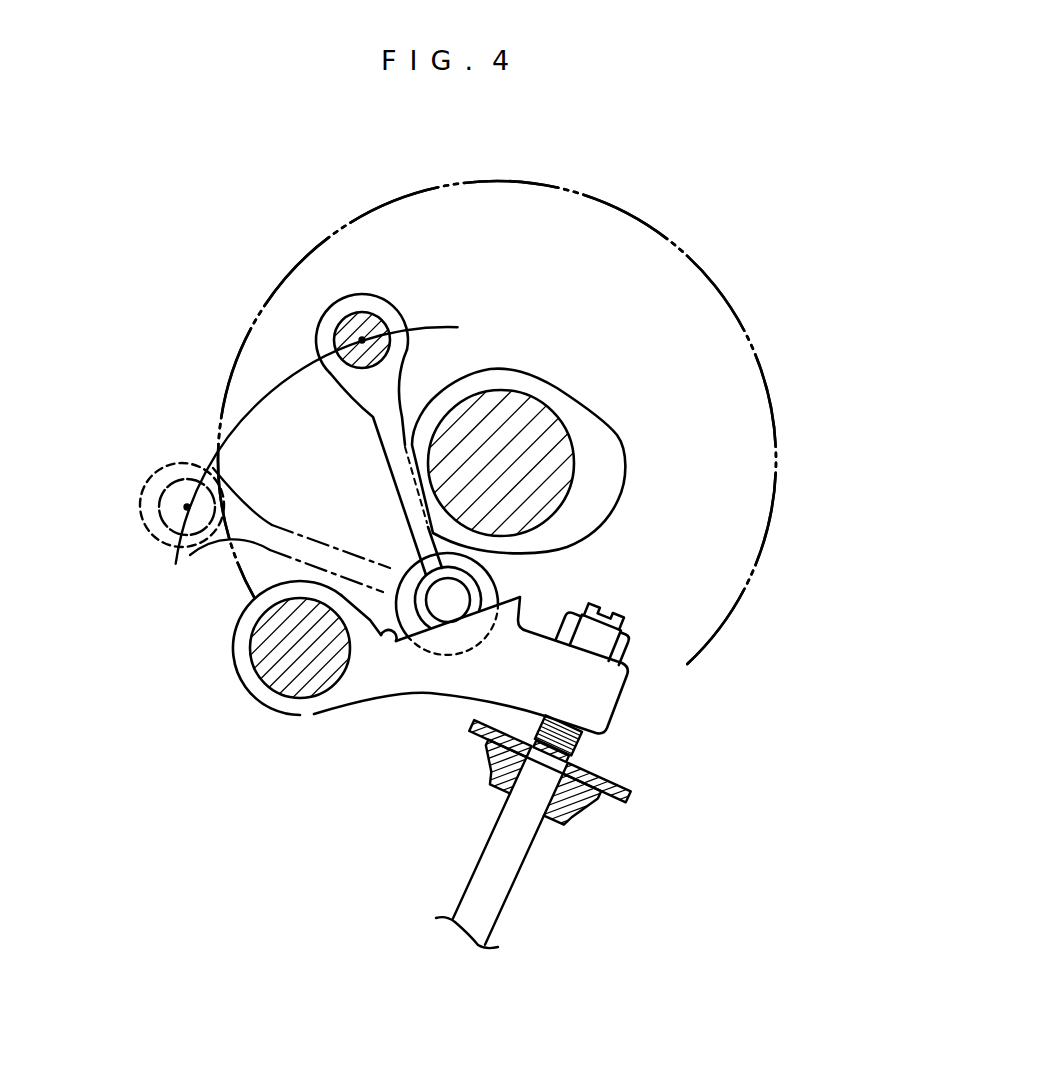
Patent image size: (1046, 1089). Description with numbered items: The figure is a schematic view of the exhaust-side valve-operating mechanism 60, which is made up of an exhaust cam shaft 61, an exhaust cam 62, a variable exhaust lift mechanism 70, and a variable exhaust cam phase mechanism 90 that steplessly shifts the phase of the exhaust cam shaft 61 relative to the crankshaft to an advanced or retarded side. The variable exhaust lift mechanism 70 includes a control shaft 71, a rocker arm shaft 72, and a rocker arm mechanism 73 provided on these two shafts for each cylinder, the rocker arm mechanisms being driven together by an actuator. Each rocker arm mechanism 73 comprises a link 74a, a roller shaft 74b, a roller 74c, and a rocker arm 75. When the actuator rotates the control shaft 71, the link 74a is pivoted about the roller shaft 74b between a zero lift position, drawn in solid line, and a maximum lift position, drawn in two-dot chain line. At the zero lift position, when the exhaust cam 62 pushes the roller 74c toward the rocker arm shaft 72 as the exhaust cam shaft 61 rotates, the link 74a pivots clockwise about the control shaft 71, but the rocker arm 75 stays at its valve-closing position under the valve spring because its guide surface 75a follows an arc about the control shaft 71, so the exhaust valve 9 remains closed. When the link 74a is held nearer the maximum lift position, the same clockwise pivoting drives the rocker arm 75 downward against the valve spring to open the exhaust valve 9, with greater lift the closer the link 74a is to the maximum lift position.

The exhaust valve 9 is at (514, 878).
The exhaust-side valve-operating mechanism 60 is at (703, 178).
The exhaust cam shaft 61 is at (500, 395).
The exhaust cam 62 is at (581, 393).
The variable exhaust lift mechanism 70 is at (200, 367).
The control shaft 71 is at (380, 317).
The rocker arm shaft 72 is at (298, 682).
The rocker arm mechanism 73 is at (190, 618).
The link 74a is at (367, 292).
The roller shaft 74b is at (440, 600).
The roller 74c is at (497, 582).
The rocker arm 75 is at (252, 700).
The guide surface 75a is at (380, 645).
The variable exhaust cam phase mechanism 90 is at (748, 339).